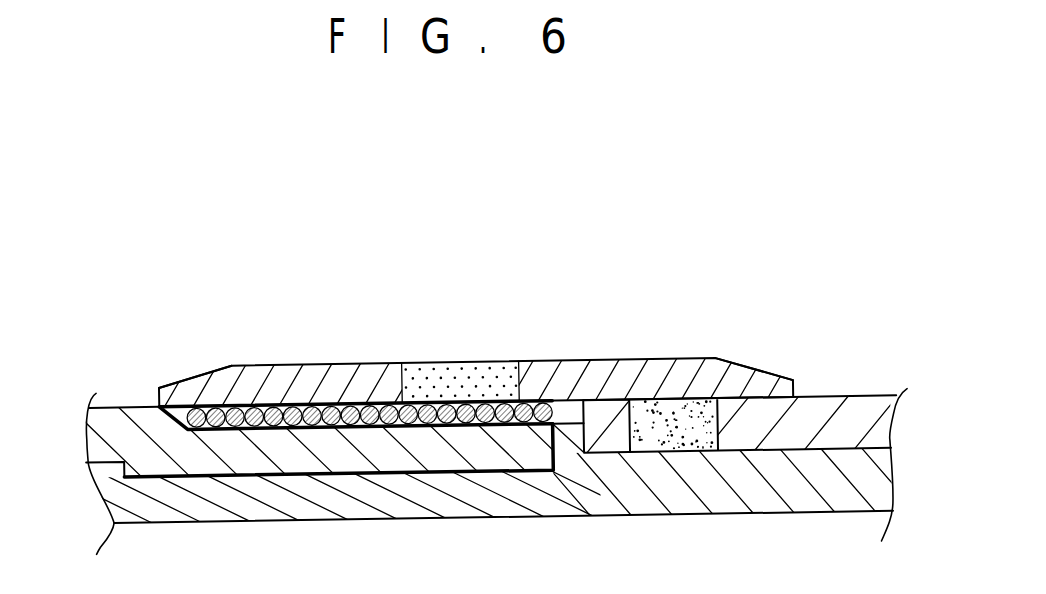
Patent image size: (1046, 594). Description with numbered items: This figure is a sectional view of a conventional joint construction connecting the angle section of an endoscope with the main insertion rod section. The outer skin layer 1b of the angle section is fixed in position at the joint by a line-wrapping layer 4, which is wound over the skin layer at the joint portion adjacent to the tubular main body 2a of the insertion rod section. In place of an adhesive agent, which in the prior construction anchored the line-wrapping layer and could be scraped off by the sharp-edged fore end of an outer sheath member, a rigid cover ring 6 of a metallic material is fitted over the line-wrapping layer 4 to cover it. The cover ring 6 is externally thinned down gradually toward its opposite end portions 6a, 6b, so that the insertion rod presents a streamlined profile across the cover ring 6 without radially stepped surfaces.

The outer skin layer 1b is at (130, 433).
The tubular main body 2a is at (862, 407).
The line-wrapping layer 4 is at (386, 405).
The rigid cover ring 6 is at (603, 362).
The left tapered edge of cover 6a is at (195, 375).
The right tapered edge of cover 6b is at (767, 373).